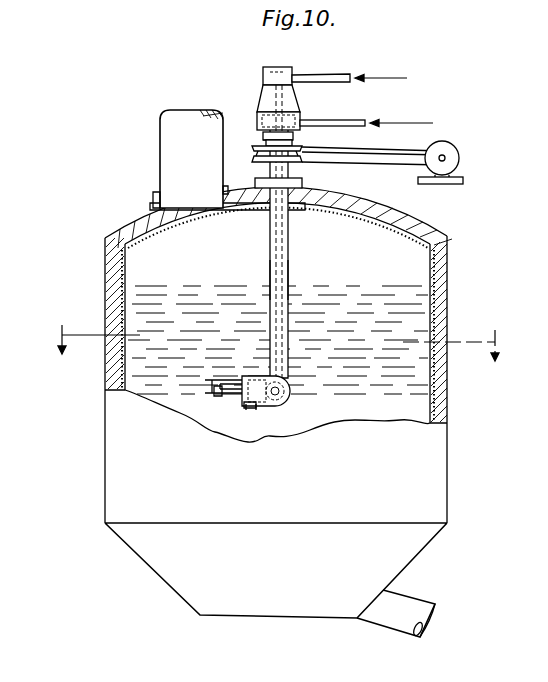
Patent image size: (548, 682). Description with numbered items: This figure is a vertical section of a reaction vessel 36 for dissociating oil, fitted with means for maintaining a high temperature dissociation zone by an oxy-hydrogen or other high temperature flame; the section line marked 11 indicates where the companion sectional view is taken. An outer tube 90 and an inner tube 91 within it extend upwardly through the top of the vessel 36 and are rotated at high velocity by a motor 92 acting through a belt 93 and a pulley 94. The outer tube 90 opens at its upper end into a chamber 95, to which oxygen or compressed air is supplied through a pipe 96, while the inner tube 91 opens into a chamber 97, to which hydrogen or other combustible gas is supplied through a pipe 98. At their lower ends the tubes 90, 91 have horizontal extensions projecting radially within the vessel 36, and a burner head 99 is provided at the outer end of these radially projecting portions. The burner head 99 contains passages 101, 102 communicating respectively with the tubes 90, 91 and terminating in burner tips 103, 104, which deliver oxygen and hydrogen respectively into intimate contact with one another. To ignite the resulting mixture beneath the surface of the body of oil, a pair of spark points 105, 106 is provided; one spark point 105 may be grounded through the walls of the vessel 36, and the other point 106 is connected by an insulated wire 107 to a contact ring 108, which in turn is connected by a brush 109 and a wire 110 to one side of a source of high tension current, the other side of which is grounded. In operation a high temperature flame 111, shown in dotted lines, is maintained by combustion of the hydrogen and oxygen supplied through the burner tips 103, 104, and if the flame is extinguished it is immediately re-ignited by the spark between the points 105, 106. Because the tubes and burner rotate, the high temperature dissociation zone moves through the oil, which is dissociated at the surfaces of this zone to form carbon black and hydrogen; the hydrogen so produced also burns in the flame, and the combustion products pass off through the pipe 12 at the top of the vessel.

The section line 11 is at (278, 343).
The pipe 12 is at (190, 159).
The vessel 36 is at (437, 316).
The outer tube 90 is at (326, 191).
The inner tube 91 is at (290, 243).
The motor 92 is at (450, 151).
The belt 93 is at (388, 156).
The pulley 94 is at (301, 153).
The chamber 95 is at (300, 112).
The pipe 96 is at (340, 120).
The chamber 97 is at (280, 72).
The pipe 98 is at (333, 75).
The burner head 99 is at (268, 408).
The passage 101 is at (276, 401).
The passage 102 is at (250, 410).
The burner tip 103 is at (246, 404).
The burner tip 104 is at (232, 383).
The spark point 105 is at (218, 391).
The spark point 106 is at (215, 379).
The insulated wire 107 is at (270, 276).
The contact ring 108 is at (258, 150).
The brush 109 is at (264, 137).
The wire 110 is at (248, 122).
The flame 111 is at (210, 381).